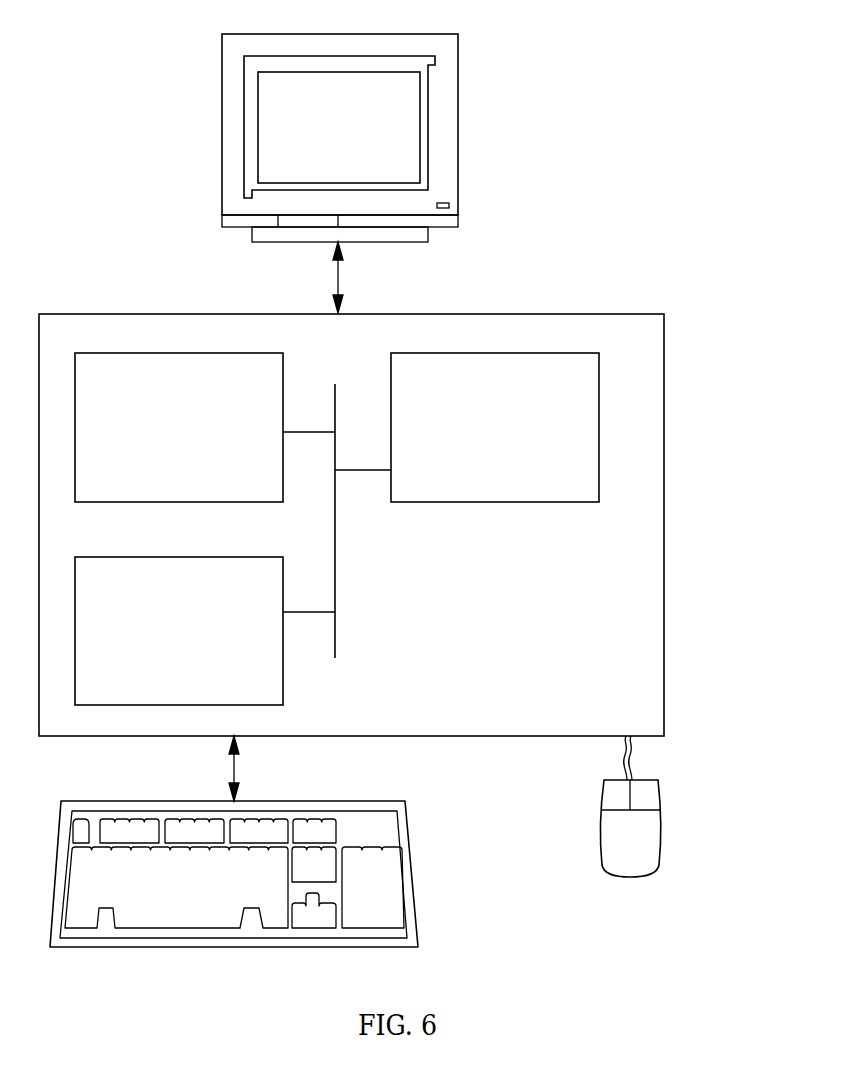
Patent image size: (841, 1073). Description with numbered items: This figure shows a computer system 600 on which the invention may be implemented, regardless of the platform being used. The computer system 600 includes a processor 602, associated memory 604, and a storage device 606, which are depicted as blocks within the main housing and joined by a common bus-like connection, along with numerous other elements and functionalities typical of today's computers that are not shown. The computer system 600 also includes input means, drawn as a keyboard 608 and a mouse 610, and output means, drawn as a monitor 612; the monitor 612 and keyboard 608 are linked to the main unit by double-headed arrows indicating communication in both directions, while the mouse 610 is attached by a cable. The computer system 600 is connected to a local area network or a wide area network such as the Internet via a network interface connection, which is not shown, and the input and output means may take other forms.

The computer system 600 is at (683, 178).
The processor 602 is at (195, 437).
The memory 604 is at (193, 641).
The storage device 606 is at (508, 439).
The keyboard 608 is at (210, 899).
The mouse 610 is at (668, 799).
The monitor 612 is at (353, 139).